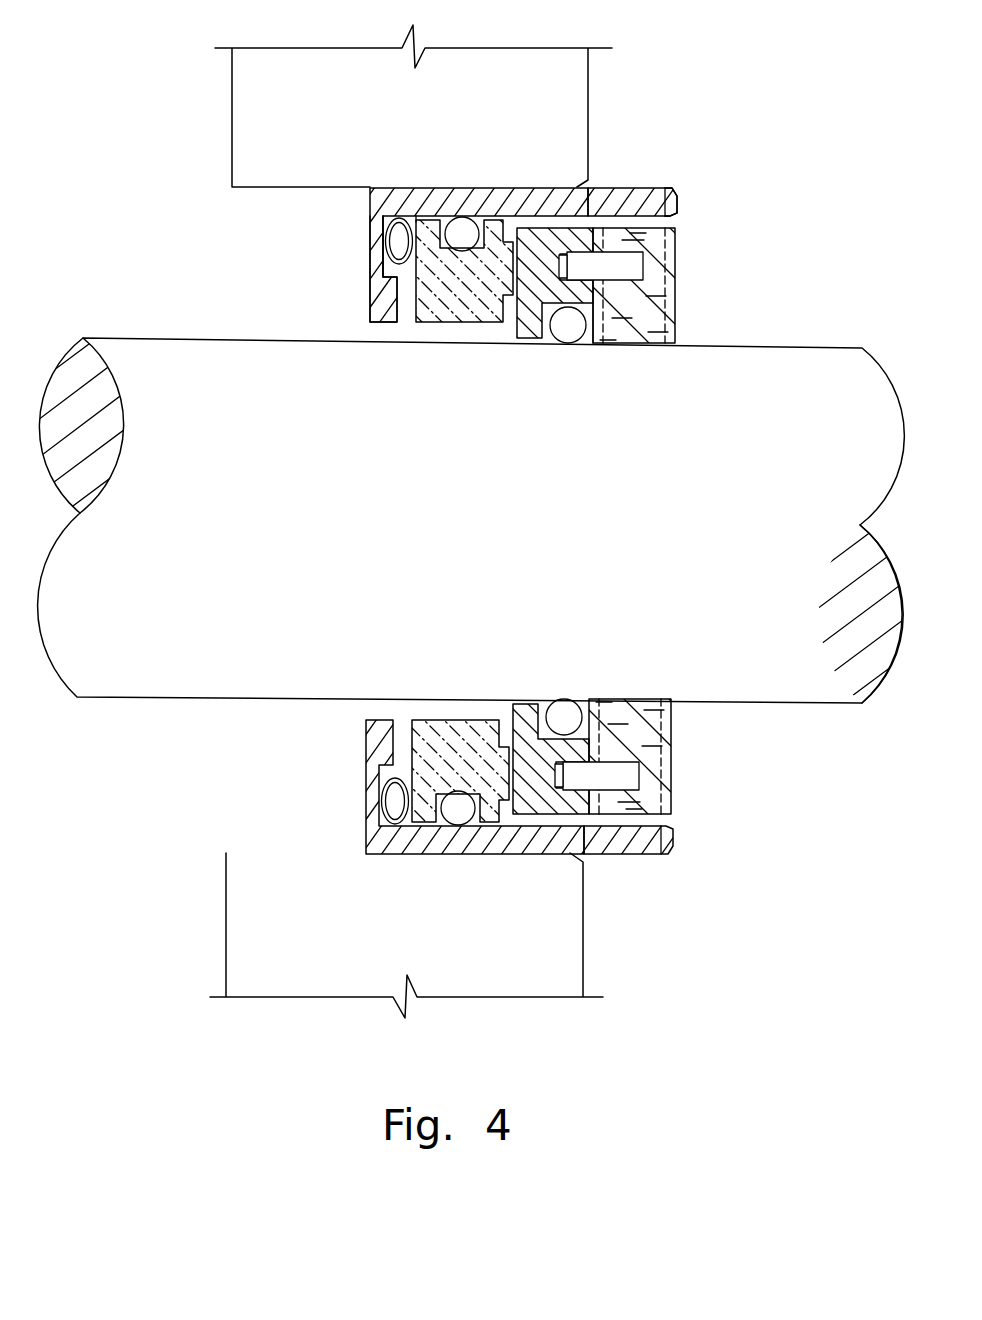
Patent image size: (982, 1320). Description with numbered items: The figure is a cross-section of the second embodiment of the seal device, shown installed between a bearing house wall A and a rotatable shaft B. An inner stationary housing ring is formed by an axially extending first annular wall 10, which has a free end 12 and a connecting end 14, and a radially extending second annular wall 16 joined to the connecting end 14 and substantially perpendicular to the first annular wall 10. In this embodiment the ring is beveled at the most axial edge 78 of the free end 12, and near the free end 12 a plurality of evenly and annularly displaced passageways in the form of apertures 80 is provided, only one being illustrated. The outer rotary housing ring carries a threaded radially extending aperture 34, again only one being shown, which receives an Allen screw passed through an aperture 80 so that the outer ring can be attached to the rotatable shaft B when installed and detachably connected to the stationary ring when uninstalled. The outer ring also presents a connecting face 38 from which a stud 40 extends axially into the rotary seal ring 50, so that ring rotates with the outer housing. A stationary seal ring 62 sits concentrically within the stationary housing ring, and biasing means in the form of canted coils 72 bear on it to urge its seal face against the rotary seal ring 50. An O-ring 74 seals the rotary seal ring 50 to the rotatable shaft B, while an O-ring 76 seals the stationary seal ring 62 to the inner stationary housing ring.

The bearing house wall A is at (273, 80).
The rotatable shaft B is at (270, 350).
The first annular wall 10 is at (497, 190).
The free end 12 is at (675, 188).
The connecting end 14 is at (397, 187).
The second annular wall 16 is at (382, 250).
The threaded radially extending aperture 34 is at (653, 289).
The connecting face 38 is at (582, 343).
The stud 40 is at (586, 268).
The rotary seal ring 50 is at (518, 320).
The stationary seal ring 62 is at (448, 318).
The canted coils 72 is at (421, 222).
The O-ring 74 is at (553, 343).
The O-ring 76 is at (463, 217).
The most axial edge 78 is at (670, 217).
The aperture 80 is at (637, 197).